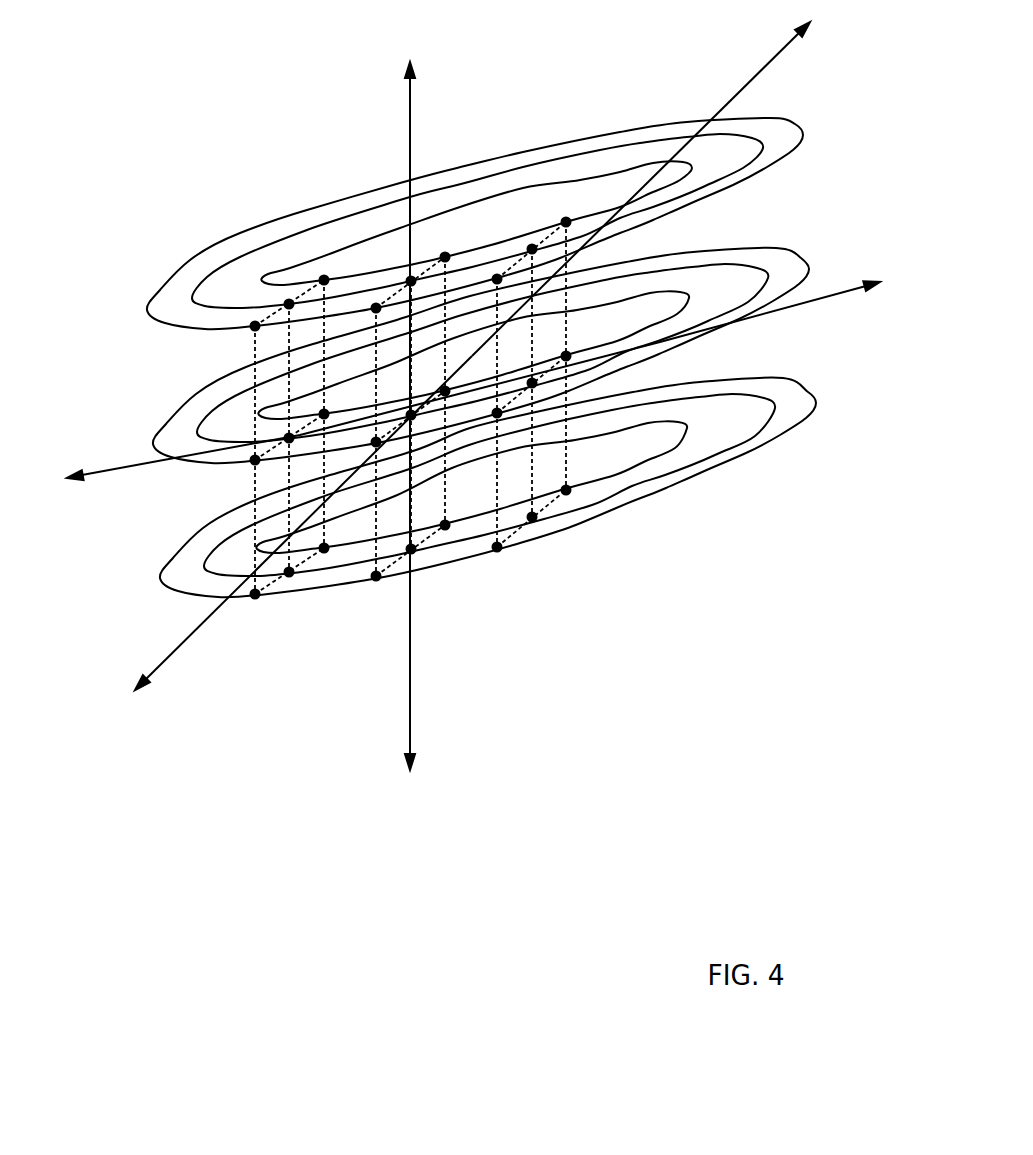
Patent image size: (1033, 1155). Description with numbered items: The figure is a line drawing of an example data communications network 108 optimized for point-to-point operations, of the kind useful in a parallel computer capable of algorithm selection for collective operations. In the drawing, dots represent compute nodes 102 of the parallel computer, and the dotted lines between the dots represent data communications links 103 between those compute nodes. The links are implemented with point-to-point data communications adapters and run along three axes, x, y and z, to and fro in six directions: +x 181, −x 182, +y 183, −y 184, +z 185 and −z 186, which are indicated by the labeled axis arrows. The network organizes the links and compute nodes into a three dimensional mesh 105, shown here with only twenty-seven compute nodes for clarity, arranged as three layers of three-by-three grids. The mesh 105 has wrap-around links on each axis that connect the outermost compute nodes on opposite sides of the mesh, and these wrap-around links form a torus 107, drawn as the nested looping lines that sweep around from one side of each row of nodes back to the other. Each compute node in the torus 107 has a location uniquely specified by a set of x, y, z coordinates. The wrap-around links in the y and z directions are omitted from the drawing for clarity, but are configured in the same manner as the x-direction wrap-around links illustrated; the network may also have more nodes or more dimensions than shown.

The compute nodes 102 is at (500, 550).
The data communications links 103 is at (253, 357).
The three dimensional mesh 105 is at (443, 437).
The torus 107 is at (233, 225).
The data communications network 108 is at (462, 563).
The +x direction 181 is at (889, 311).
The −x direction 182 is at (66, 515).
The +y direction 183 is at (826, 46).
The −y direction 184 is at (101, 741).
The +z direction 185 is at (397, 48).
The −z direction 186 is at (398, 834).